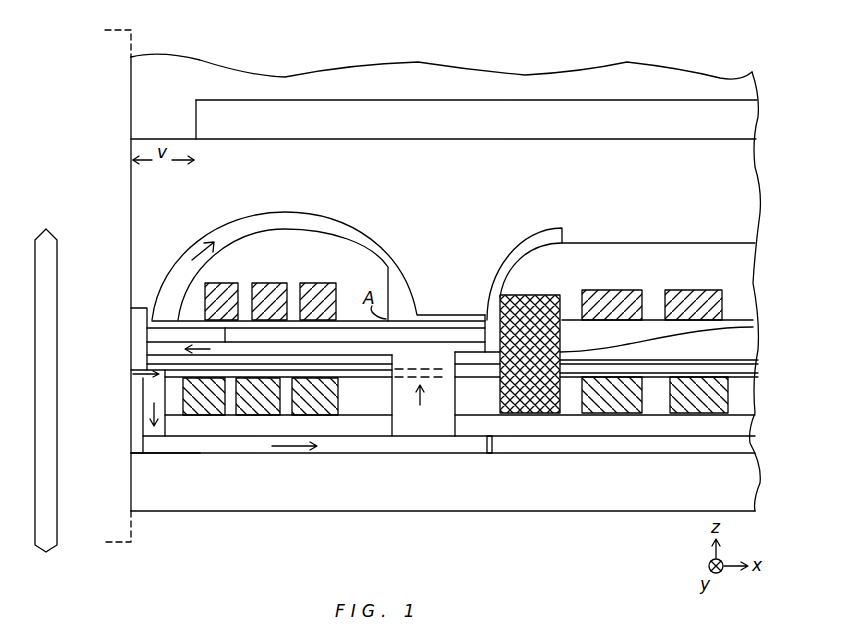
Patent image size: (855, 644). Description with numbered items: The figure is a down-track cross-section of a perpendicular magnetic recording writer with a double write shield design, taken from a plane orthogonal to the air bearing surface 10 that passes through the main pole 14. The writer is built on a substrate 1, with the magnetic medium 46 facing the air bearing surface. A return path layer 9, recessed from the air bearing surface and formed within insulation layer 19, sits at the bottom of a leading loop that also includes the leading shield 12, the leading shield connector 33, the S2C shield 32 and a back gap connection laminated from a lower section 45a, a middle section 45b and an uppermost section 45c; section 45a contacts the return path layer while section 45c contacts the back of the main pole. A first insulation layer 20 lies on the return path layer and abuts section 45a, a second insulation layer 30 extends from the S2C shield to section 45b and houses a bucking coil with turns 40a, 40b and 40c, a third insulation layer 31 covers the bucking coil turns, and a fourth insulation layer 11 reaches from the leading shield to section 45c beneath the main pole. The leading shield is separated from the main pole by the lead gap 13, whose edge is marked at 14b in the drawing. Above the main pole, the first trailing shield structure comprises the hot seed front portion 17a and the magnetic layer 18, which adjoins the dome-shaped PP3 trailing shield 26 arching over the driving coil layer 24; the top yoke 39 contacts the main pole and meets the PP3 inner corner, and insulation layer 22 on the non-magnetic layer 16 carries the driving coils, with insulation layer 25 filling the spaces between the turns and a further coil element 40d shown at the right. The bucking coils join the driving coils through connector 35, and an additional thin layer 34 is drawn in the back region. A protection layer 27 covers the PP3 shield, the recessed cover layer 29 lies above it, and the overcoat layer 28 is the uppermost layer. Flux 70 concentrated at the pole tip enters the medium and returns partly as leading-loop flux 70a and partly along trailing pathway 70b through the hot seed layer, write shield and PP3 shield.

The substrate 1 is at (745, 480).
The return path (RTP) layer 9 is at (156, 447).
The ABS 10 is at (418, 287).
The fourth insulation layer 11 is at (373, 373).
The leading shield 12 is at (143, 363).
The lead gap 13 is at (147, 352).
The main pole 14 is at (457, 347).
The plasmon generator edge portion 14b is at (143, 345).
The non-magnetic layer 16 is at (153, 327).
The hot seed layer front portion 17a is at (143, 338).
The first trailing shield layer 18 is at (138, 333).
The insulation layer 19 is at (140, 445).
The first insulation layer 20 is at (140, 421).
The insulation layer 22 is at (163, 300).
The driving coil layer 24 is at (228, 285).
The insulation layer 25 is at (178, 285).
The PP3 trailing shield 26 is at (195, 265).
The protection layer 27 is at (147, 200).
The overcoat layer 28 is at (140, 103).
The cover layer 29 is at (745, 118).
The second insulation layer 30 is at (142, 388).
The third insulation layer 31 is at (352, 362).
The S2C shield 32 is at (147, 397).
The leading shield connector (LSC) 33 is at (135, 373).
The nonmagnetic layer 34 is at (750, 363).
The connector 35 is at (745, 334).
The top yoke 39 is at (433, 333).
The bucking coil turn 40a is at (205, 402).
The bucking coil turn 40b is at (263, 402).
The bucking coil turn 40c is at (325, 400).
The coil winding 40d is at (715, 400).
The BGC lower section 45a is at (438, 430).
The BGC section 45b is at (447, 366).
The BGC uppermost section 45c is at (452, 373).
The magnetic medium 46 is at (46, 550).
The magnetic flux 70 is at (211, 349).
The leading loop flux 70a is at (300, 455).
The trailing return pathway 70b is at (405, 298).